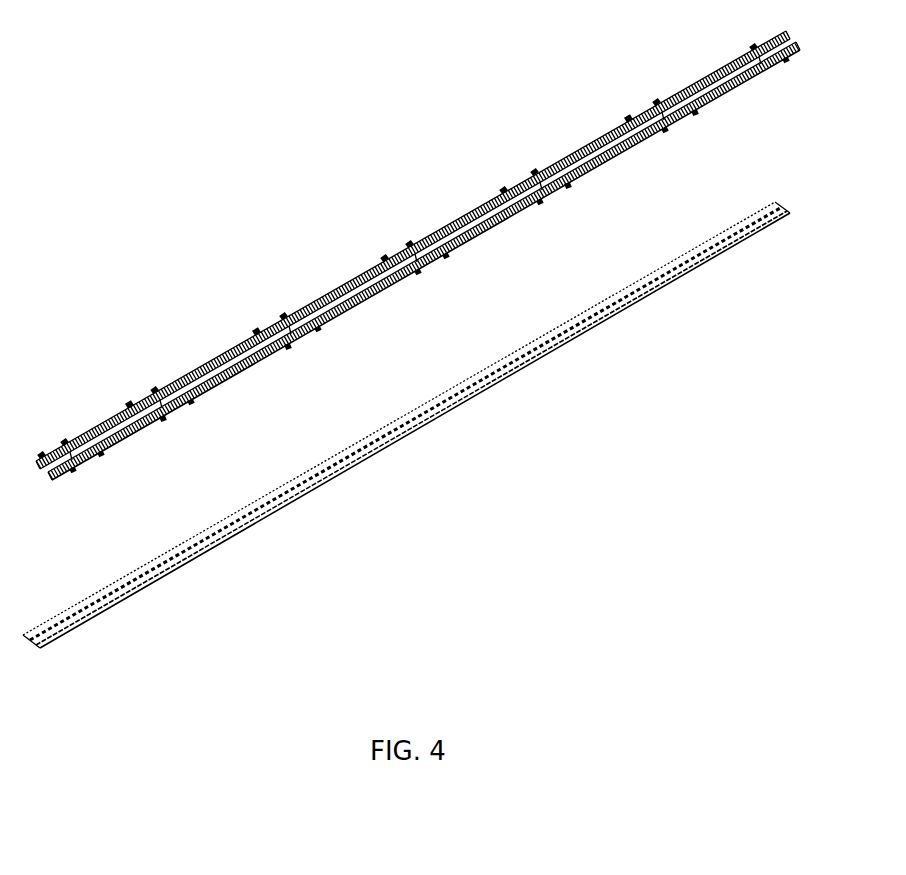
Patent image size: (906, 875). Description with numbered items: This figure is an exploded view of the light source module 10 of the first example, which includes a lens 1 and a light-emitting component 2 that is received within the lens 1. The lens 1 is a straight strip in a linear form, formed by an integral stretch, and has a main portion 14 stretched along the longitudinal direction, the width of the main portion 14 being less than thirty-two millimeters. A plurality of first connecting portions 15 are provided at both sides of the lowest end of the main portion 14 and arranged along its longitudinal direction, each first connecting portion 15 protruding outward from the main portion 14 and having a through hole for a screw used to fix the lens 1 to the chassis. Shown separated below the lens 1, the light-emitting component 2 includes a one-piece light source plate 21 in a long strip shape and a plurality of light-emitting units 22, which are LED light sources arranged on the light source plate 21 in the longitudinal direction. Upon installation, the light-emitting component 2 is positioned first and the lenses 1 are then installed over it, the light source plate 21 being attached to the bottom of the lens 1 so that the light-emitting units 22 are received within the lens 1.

The light source module 10 is at (165, 132).
The lens 1 is at (595, 138).
The main portion 14 is at (455, 235).
The first connecting portion 15 is at (440, 254).
The light-emitting component 2 is at (573, 333).
The light source plate 21 is at (437, 415).
The light-emitting unit 22 is at (463, 403).